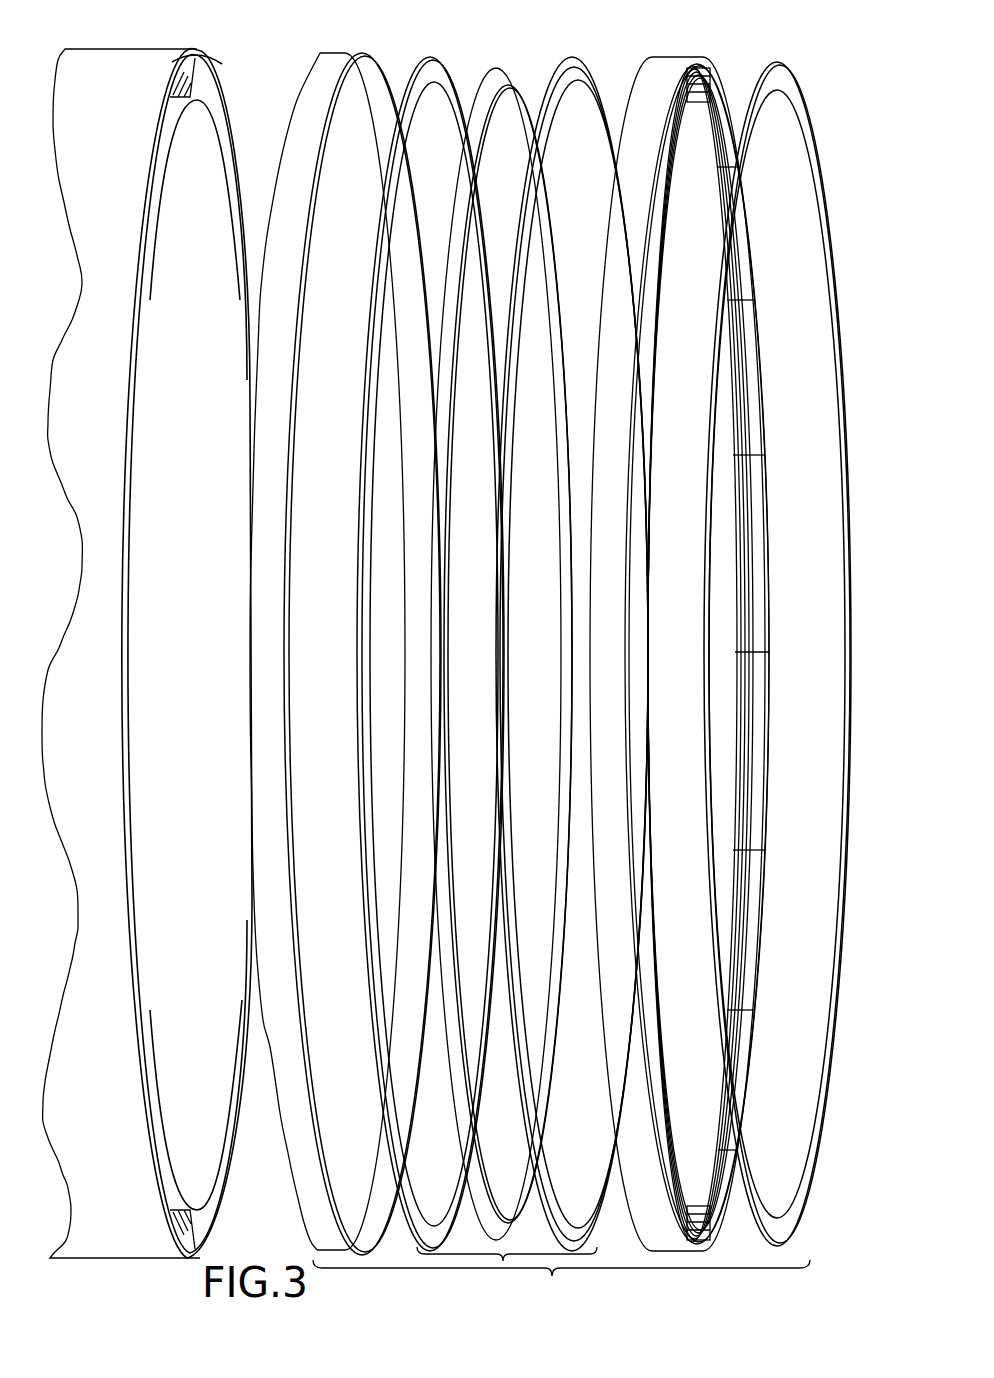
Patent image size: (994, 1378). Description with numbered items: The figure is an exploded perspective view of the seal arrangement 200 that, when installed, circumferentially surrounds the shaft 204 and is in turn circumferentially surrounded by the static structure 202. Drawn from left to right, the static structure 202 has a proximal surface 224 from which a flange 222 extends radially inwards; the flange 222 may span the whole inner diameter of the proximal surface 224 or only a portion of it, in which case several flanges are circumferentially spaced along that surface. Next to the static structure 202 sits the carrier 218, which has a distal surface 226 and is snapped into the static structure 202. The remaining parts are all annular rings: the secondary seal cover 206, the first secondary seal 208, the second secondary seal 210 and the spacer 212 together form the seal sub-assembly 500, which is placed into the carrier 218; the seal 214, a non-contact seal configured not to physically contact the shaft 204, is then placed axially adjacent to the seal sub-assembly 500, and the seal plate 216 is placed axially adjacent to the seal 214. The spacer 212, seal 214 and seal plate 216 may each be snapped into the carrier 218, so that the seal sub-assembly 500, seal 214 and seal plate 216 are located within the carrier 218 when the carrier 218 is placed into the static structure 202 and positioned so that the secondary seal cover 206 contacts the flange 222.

The seal arrangement 200 is at (561, 1283).
The static structure 202 is at (125, 76).
The shaft 204 is at (205, 128).
The secondary seal cover 206 is at (450, 77).
The first secondary seal 208 is at (540, 90).
The second secondary seal 210 is at (503, 72).
The spacer 212 is at (600, 77).
The seal 214 is at (678, 58).
The seal plate 216 is at (790, 80).
The carrier 218 is at (312, 92).
The flange 222 is at (183, 72).
The proximal surface 224 is at (213, 80).
The distal surface 226 is at (335, 58).
The seal sub-assembly 500 is at (507, 1270).